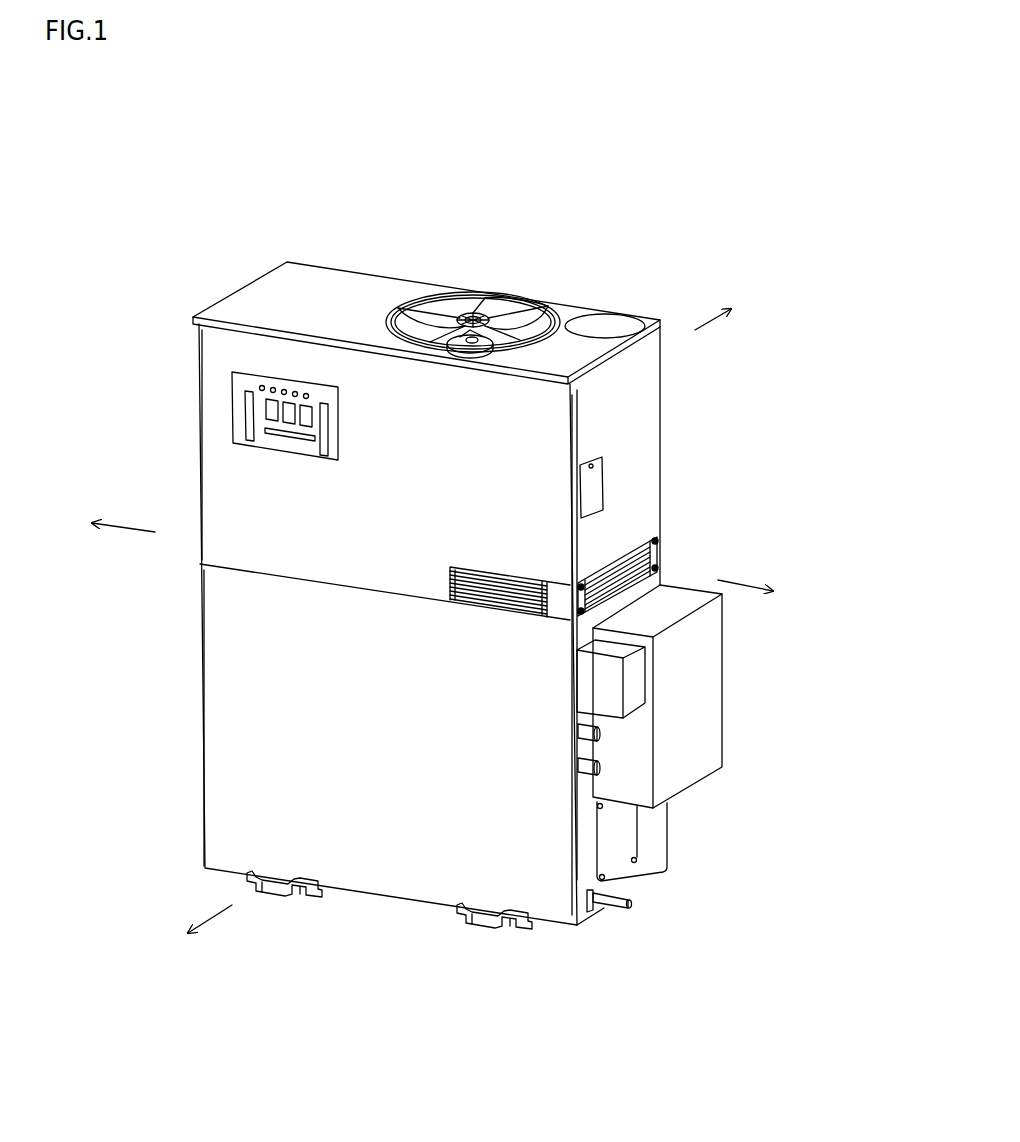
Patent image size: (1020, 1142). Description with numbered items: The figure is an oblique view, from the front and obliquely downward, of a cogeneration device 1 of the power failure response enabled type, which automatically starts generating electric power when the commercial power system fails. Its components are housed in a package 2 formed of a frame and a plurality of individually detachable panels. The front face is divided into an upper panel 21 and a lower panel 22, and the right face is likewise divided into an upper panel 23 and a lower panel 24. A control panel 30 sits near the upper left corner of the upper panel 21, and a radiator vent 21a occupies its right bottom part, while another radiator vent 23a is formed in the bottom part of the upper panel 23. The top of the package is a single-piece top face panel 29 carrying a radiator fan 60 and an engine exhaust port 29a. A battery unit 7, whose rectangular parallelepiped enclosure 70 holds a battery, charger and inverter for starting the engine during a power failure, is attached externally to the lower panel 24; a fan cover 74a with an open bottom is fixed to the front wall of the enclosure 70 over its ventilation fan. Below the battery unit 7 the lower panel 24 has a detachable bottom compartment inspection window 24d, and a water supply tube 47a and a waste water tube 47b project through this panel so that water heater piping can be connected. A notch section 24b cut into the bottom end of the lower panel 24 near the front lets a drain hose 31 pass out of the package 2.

The cogeneration device 1 is at (441, 569).
The package 2 is at (430, 541).
The battery unit 7 is at (636, 657).
The upper panel 21 is at (230, 487).
The radiator vent 21a is at (530, 597).
The lower panel 22 is at (230, 722).
The upper panel 23 is at (638, 447).
The radiator vent 23a is at (643, 584).
The lower panel 24 is at (653, 820).
The notch section 24b is at (592, 912).
The bottom compartment inspection window 24d is at (623, 857).
The top face panel 29 is at (263, 290).
The engine exhaust port 29a is at (618, 322).
The control panel 30 is at (262, 405).
The drain hose 31 is at (625, 907).
The water supply tube 47a is at (600, 733).
The waste water tube 47b is at (600, 767).
The radiator fan 60 is at (473, 307).
The enclosure 70 is at (698, 657).
The fan cover 74a is at (590, 685).